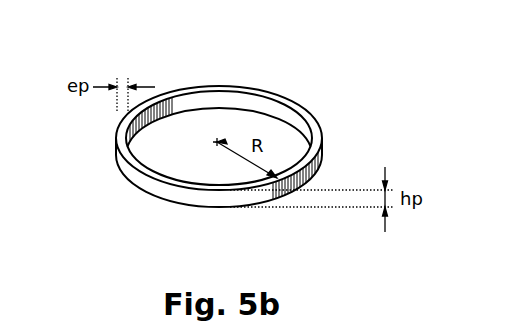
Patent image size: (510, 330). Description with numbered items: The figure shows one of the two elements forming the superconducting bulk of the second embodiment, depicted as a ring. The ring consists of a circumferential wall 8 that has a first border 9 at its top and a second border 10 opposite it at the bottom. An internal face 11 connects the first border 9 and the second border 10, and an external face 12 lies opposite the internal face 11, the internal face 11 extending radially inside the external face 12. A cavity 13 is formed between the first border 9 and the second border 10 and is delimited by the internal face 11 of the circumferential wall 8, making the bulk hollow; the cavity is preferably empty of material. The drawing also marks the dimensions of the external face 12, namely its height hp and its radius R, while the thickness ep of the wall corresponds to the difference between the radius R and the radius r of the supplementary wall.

The circumferential wall 8 is at (315, 170).
The first border 9 is at (167, 91).
The second border 10 is at (272, 217).
The internal face 11 is at (238, 100).
The external face 12 is at (292, 99).
The cavity 13 is at (192, 146).